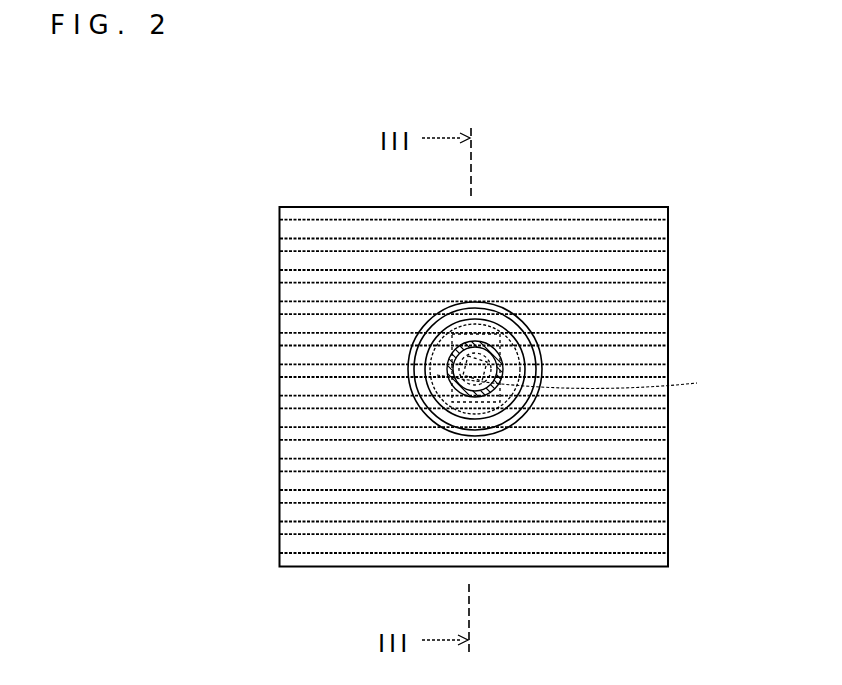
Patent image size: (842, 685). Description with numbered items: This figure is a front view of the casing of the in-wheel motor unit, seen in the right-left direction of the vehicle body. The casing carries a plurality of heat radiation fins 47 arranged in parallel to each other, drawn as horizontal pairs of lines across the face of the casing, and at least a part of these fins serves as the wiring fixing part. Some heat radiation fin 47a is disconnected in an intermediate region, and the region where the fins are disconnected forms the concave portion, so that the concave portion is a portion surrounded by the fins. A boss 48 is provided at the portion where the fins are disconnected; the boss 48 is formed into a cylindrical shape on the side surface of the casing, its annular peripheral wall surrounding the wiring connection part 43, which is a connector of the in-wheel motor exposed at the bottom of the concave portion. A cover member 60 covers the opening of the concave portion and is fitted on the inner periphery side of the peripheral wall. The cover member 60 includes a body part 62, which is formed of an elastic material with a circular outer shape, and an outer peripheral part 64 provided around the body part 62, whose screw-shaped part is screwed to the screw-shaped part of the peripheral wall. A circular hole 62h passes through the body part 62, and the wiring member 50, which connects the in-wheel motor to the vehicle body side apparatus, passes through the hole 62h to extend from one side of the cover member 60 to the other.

The wiring connection part 43 is at (478, 392).
The heat radiation fin 47 is at (660, 213).
The disconnected heat radiation fin 47a is at (660, 308).
The boss 48 is at (560, 386).
The wiring member 50 is at (498, 345).
The cover member 60 is at (562, 614).
The body part 62 is at (508, 427).
The hole 62h is at (447, 372).
The outer peripheral part 64 is at (488, 418).